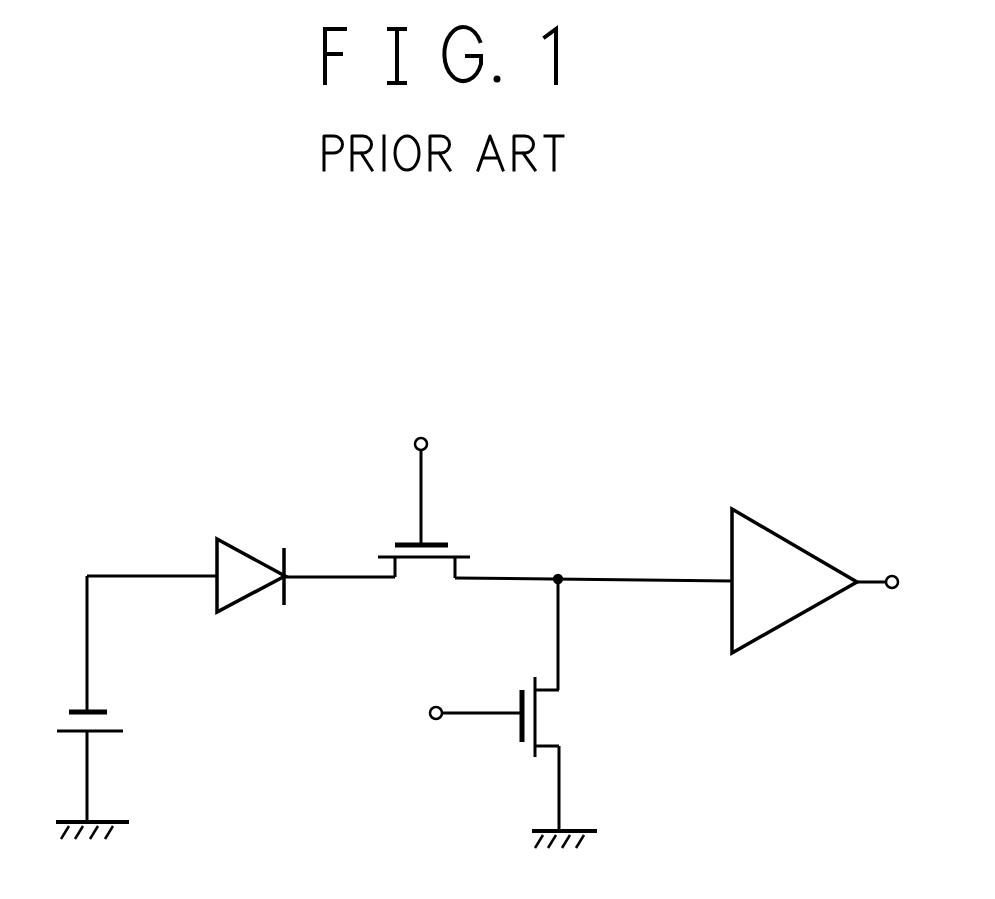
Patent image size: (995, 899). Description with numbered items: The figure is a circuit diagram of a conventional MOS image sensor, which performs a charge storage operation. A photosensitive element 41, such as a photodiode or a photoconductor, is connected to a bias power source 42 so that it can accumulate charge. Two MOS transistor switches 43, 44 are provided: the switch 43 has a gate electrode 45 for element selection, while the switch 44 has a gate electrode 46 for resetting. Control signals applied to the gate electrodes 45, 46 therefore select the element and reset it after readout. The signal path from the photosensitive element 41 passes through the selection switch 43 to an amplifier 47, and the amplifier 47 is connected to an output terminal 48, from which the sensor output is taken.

The photosensitive element 41 is at (245, 550).
The bias power source 42 is at (115, 719).
The switch 43 is at (453, 550).
The switch 44 is at (552, 728).
The gate electrode 45 is at (417, 438).
The gate electrode 46 is at (437, 720).
The amplifier 47 is at (813, 552).
The output terminal 48 is at (890, 576).